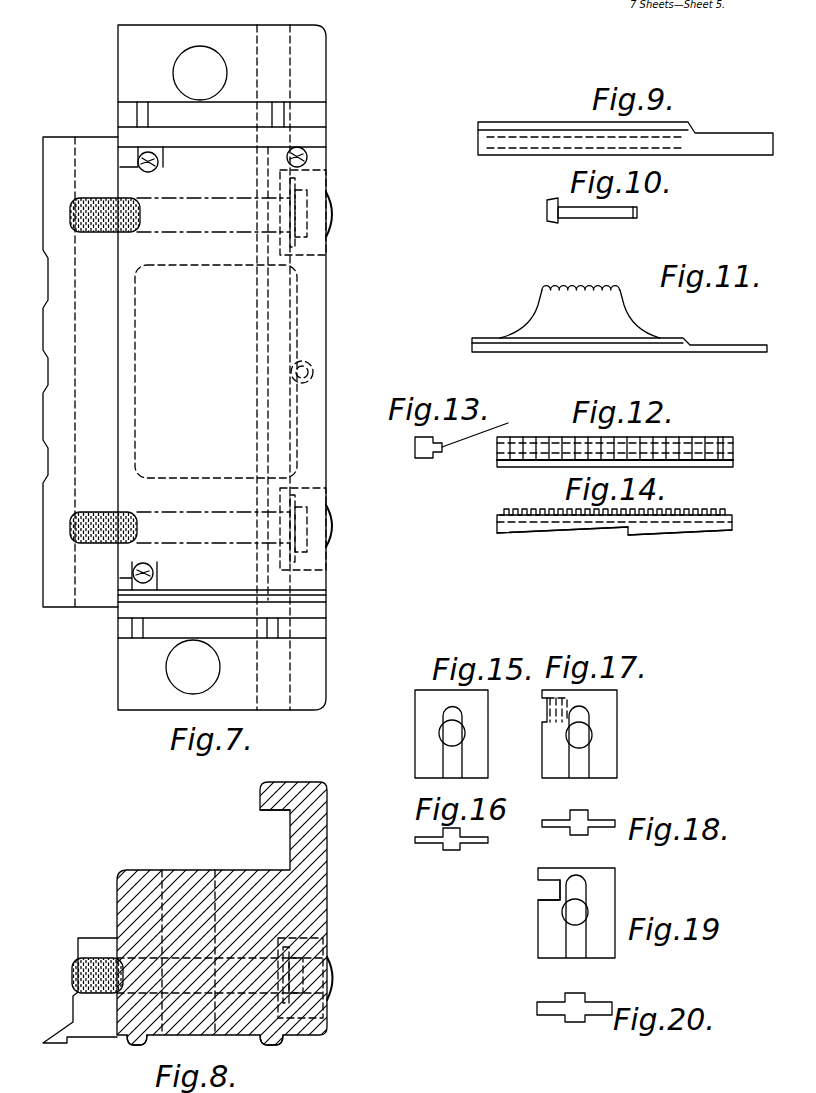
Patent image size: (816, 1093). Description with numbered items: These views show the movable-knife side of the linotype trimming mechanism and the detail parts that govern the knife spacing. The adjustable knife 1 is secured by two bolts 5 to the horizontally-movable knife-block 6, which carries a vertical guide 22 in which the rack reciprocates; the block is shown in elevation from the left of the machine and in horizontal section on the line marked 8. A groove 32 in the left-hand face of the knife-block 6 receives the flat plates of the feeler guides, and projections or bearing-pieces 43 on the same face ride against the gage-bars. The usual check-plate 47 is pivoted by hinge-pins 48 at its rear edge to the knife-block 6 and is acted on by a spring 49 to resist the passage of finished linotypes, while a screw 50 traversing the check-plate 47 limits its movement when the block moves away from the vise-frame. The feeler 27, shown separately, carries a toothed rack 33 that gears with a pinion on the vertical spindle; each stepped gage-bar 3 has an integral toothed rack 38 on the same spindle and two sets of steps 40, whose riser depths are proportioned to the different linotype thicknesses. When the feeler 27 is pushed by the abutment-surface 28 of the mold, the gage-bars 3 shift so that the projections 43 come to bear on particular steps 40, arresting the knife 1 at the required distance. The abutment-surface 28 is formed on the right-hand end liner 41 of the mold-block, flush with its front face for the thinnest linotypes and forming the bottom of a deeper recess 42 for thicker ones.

In FIG. 7, the adjustable knife 1 is at (80, 372).
In FIG. 8, the adjustable knife 1 is at (70, 1025).
In FIG. 12, the gage-bar 3 is at (727, 445).
In FIG. 13, the gage-bar 3 is at (415, 456).
In FIG. 14, the gage-bar 3 is at (520, 527).
In FIG. 7, the bolt 5 is at (334, 216).
In FIG. 8, the bolt 5 is at (329, 974).
In FIG. 7, the knife-block 6 is at (118, 30).
In FIG. 8, the knife-block 6 is at (222, 913).
In FIG. 7, the antifriction-roller 8 is at (372, 115).
In FIG. 8, the vertical guide 22 is at (272, 808).
In FIG. 9, the feeler 27 is at (738, 148).
In FIG. 11, the feeler 27 is at (619, 321).
In FIG. 15, the abutment-surface 28 is at (418, 710).
In FIG. 16, the abutment-surface 28 is at (476, 847).
In FIG. 17, the abutment-surface 28 is at (548, 725).
In FIG. 19, the abutment-surface 28 is at (545, 898).
In FIG. 20, the abutment-surface 28 is at (560, 1010).
In FIG. 7, the groove 32 is at (320, 600).
In FIG. 10, the toothed rack 33 is at (637, 213).
In FIG. 11, the toothed rack 33 is at (573, 286).
In FIG. 12, the toothed rack 38 is at (553, 443).
In FIG. 14, the toothed rack 38 is at (728, 504).
In FIG. 14, the steps 40 is at (548, 534).
In FIG. 15, the end liner 41 is at (425, 767).
In FIG. 17, the end liner 41 is at (607, 727).
In FIG. 19, the end liner 41 is at (606, 948).
In FIG. 19, the recess 42 is at (550, 892).
In FIG. 7, the projections or bearing-pieces 43 is at (143, 102).
In FIG. 8, the projections or bearing-pieces 43 is at (137, 1044).
In FIG. 7, the check-plate 47 is at (216, 371).
In FIG. 7, the hinge-pins 48 is at (158, 163).
In FIG. 7, the spring 49 is at (314, 375).
In FIG. 7, the screw 50 is at (307, 158).